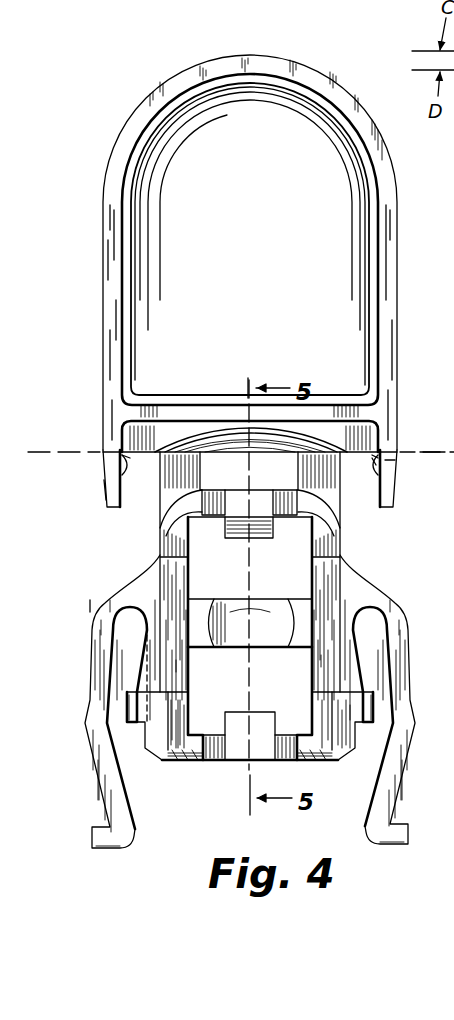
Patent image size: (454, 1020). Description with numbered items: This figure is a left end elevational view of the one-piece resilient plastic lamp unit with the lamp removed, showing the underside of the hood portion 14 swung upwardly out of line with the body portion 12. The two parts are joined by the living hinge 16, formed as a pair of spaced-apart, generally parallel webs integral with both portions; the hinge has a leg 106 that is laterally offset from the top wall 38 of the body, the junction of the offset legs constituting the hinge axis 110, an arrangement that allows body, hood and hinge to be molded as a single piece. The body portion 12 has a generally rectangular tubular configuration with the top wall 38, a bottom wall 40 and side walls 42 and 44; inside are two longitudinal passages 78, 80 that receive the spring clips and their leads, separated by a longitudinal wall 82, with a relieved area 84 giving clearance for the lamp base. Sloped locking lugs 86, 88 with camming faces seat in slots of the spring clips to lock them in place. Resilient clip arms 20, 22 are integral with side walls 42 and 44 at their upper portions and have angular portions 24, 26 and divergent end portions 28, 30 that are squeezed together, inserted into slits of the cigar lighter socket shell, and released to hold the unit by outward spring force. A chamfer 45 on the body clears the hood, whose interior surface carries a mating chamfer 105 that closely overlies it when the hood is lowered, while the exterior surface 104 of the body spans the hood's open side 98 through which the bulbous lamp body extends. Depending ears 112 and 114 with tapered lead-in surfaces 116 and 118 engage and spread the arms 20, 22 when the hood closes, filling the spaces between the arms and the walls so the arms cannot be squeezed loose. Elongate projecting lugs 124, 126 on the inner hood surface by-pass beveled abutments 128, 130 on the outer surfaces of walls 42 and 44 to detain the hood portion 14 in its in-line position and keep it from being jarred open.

The body portion 12 is at (86, 607).
The hood portion 14 is at (172, 147).
The living hinge 16 is at (155, 485).
The resilient clip arm 20 is at (98, 648).
The resilient clip arm 22 is at (398, 614).
The angular portion 24 is at (103, 786).
The angular portion 26 is at (402, 776).
The divergent end portion 28 is at (105, 845).
The divergent end portion 30 is at (398, 843).
The top wall 38 is at (287, 492).
The bottom wall 40 is at (218, 770).
The side wall 42 is at (176, 666).
The side wall 44 is at (321, 660).
The chamfer 45 is at (343, 522).
The longitudinal passage 78 is at (300, 572).
The longitudinal passage 80 is at (200, 742).
The longitudinal wall 82 is at (268, 599).
The relieved area 84 is at (238, 612).
The sloped locking lug 86 is at (229, 527).
The sloped locking lug 88 is at (260, 720).
The open side 98 is at (374, 462).
The exterior surface 104 is at (160, 586).
The chamfer 105 is at (216, 437).
The hinge leg 106 is at (319, 450).
The hinge axis 110 is at (442, 436).
The depending ear 112 is at (108, 478).
The depending ear 114 is at (390, 463).
The tapered lead-in surface 116 is at (104, 502).
The tapered lead-in surface 118 is at (398, 492).
The elongate projecting lug 124 is at (125, 458).
The elongate projecting lug 126 is at (373, 458).
The abutment 128 is at (140, 715).
The abutment 130 is at (362, 715).